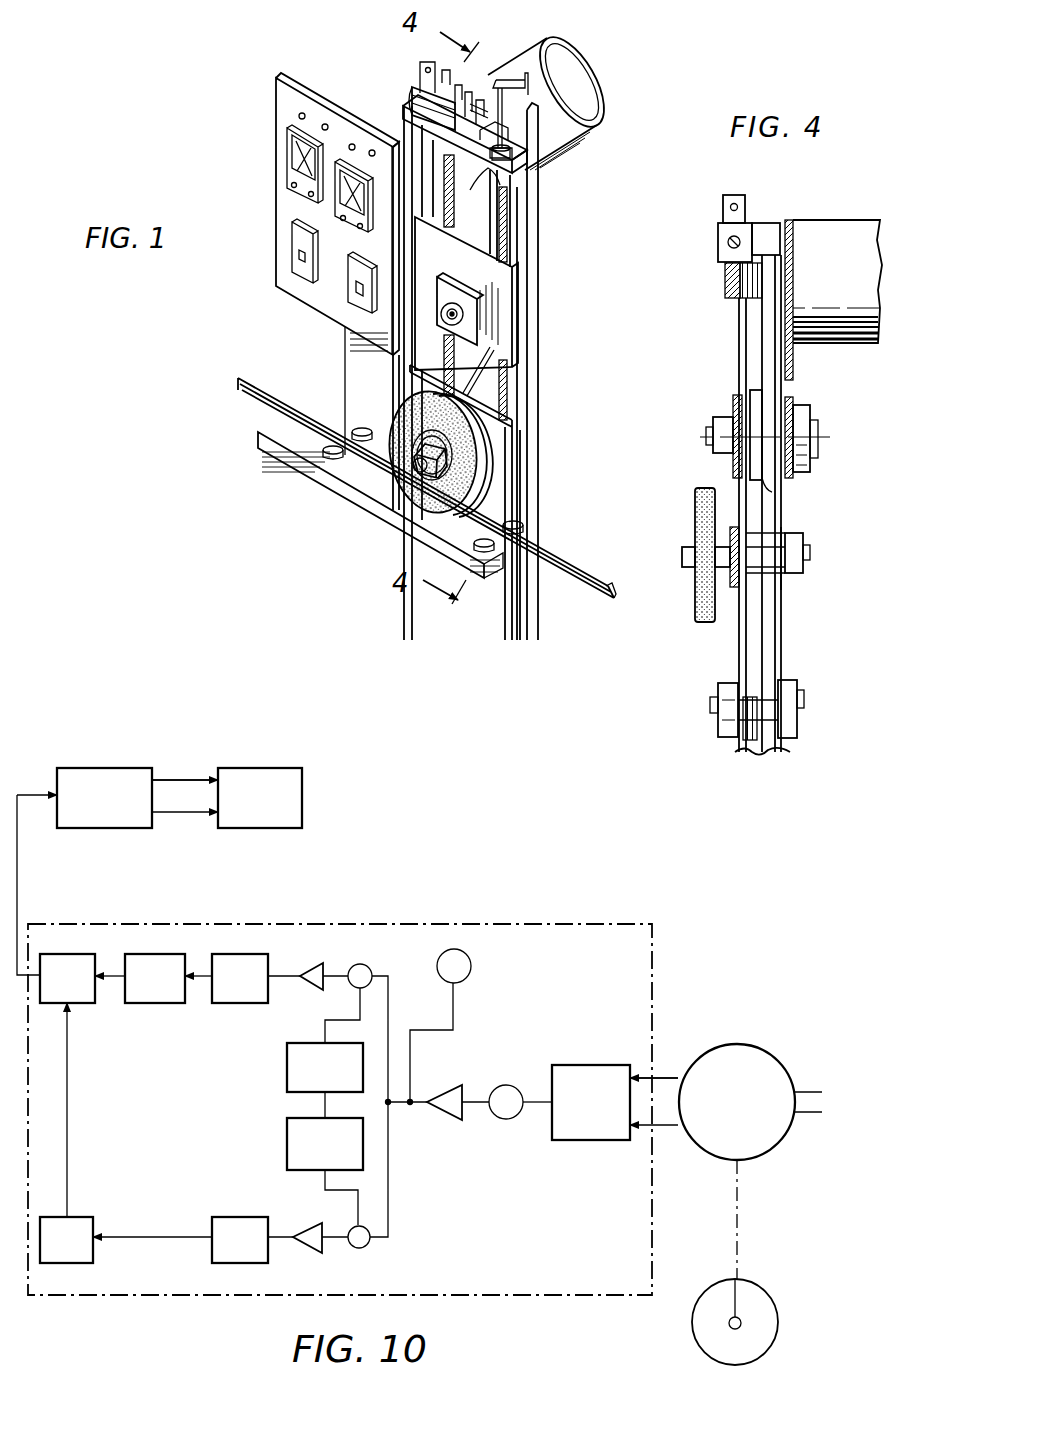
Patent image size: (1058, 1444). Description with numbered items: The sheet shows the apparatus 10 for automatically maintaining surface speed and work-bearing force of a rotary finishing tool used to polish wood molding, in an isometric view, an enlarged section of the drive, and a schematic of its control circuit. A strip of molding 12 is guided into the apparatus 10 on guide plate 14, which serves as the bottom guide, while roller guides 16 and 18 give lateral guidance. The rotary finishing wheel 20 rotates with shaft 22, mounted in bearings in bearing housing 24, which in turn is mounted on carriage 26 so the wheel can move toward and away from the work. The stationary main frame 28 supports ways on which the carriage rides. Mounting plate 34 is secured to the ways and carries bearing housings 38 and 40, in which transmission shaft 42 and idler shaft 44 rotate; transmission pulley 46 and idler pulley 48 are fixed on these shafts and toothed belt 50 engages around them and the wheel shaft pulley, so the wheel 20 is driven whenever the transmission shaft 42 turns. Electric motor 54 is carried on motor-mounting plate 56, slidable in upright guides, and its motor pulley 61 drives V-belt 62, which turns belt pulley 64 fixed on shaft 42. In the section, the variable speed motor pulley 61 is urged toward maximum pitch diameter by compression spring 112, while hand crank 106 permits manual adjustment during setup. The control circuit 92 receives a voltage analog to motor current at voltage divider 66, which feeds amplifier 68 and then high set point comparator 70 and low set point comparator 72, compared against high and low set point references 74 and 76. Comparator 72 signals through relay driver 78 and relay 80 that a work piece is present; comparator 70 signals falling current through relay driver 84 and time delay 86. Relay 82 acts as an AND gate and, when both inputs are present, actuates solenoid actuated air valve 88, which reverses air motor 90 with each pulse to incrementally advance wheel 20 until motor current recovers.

In FIG. 1, the apparatus 10 is at (548, 292).
In FIG. 4, the apparatus 10 is at (822, 546).
In FIG. 1, the strip of molding 12 is at (284, 400).
In FIG. 1, the guide plate 14 is at (268, 425).
In FIG. 1, the roller guide 16 is at (318, 478).
In FIG. 1, the roller guide 18 is at (525, 522).
In FIG. 1, the rotary finishing wheel 20 is at (433, 500).
In FIG. 4, the rotary finishing wheel 20 is at (695, 610).
In FIG. 10, the rotary finishing wheel 20 is at (768, 1305).
In FIG. 1, the shaft 22 is at (416, 468).
In FIG. 4, the shaft 22 is at (800, 558).
In FIG. 1, the bearing housing 24 is at (490, 442).
In FIG. 4, the bearing housing 24 is at (725, 568).
In FIG. 1, the carriage 26 is at (512, 420).
In FIG. 4, the carriage 26 is at (790, 585).
In FIG. 1, the main frame 28 is at (538, 325).
In FIG. 4, the main frame 28 is at (770, 645).
In FIG. 1, the mounting plate 34 is at (512, 300).
In FIG. 4, the mounting plate 34 is at (790, 395).
In FIG. 4, the bearing housing 38 is at (810, 413).
In FIG. 4, the bearing housing 40 is at (790, 725).
In FIG. 1, the transmission shaft 42 is at (447, 317).
In FIG. 4, the transmission shaft 42 is at (720, 433).
In FIG. 4, the idler shaft 44 is at (705, 708).
In FIG. 4, the transmission pulley 46 is at (738, 384).
In FIG. 4, the idler pulley 48 is at (755, 755).
In FIG. 1, the toothed belt 50 is at (502, 380).
In FIG. 4, the toothed belt 50 is at (745, 658).
In FIG. 1, the electric motor 54 is at (575, 140).
In FIG. 4, the electric motor 54 is at (845, 296).
In FIG. 10, the electric motor 54 is at (737, 1044).
In FIG. 1, the motor-mounting plate 56 is at (515, 137).
In FIG. 4, the motor-mounting plate 56 is at (795, 245).
In FIG. 1, the motor pulley 61 is at (472, 195).
In FIG. 4, the motor pulley 61 is at (770, 250).
In FIG. 4, the V-belt 62 is at (767, 333).
In FIG. 4, the belt pulley 64 is at (775, 487).
In FIG. 10, the voltage divider 66 is at (588, 1065).
In FIG. 10, the amplifier 68 is at (450, 1085).
In FIG. 10, the high set point comparator 70 is at (312, 958).
In FIG. 10, the low set point comparator 72 is at (320, 1255).
In FIG. 10, the high set point reference 74 is at (287, 1075).
In FIG. 10, the low set point reference 76 is at (287, 1143).
In FIG. 10, the relay driver 78 is at (237, 1217).
In FIG. 10, the relay 80 is at (93, 1217).
In FIG. 10, the relay 82 is at (67, 955).
In FIG. 10, the relay driver 84 is at (240, 955).
In FIG. 10, the time delay 86 is at (156, 955).
In FIG. 10, the solenoid actuated air valve 88 is at (88, 768).
In FIG. 1, the air motor 90 is at (430, 95).
In FIG. 4, the air motor 90 is at (728, 240).
In FIG. 10, the air motor 90 is at (272, 768).
In FIG. 10, the motor-load-sensing and control circuit 92 is at (402, 928).
In FIG. 1, the hand crank 106 is at (535, 85).
In FIG. 4, the compression spring 112 is at (735, 282).